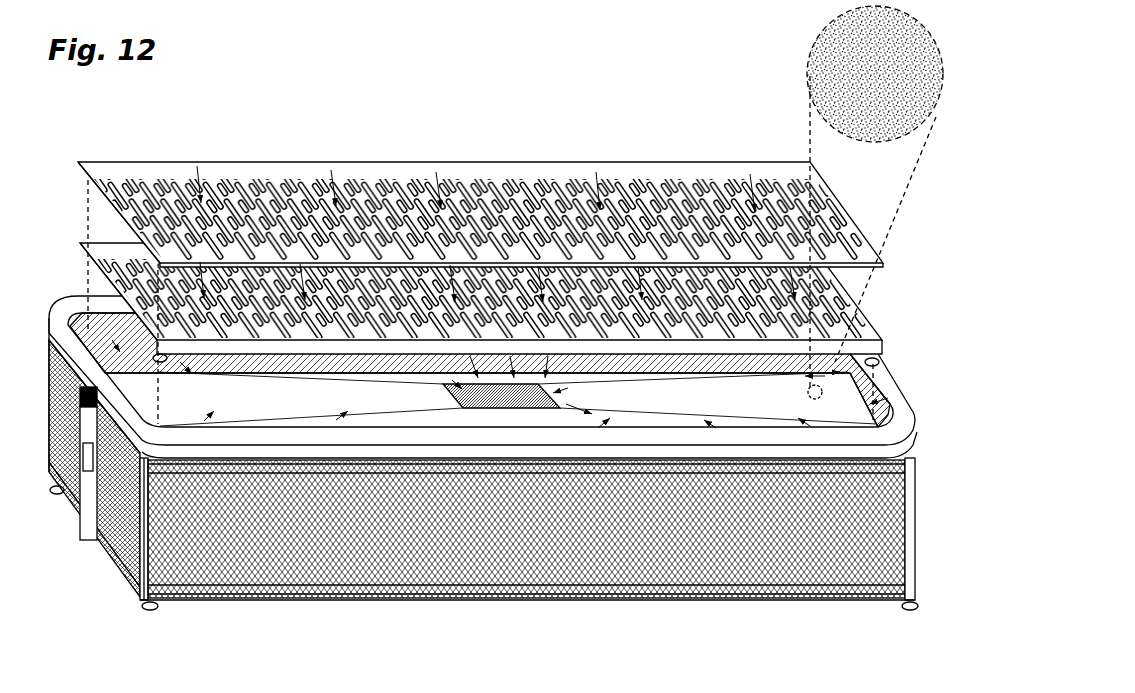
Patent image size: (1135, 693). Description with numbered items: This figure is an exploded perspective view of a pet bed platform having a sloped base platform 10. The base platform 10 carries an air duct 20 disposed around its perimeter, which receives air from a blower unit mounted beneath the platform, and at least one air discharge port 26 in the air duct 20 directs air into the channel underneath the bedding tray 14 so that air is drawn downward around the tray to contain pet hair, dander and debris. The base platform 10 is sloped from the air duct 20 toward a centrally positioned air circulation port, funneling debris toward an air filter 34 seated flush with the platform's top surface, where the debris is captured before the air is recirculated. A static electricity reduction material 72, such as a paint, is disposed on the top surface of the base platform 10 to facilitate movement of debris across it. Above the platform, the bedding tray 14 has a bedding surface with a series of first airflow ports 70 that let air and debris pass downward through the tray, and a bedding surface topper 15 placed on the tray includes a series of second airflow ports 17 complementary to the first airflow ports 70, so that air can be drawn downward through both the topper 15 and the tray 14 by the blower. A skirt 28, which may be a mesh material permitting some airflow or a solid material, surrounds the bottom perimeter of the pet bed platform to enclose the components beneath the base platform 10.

The base platform 10 is at (272, 406).
The bedding tray 14 is at (84, 257).
The bedding surface topper 15 is at (555, 161).
The second airflow ports 17 is at (693, 170).
The air duct 20 is at (888, 402).
The air discharge port 26 is at (840, 374).
The skirt 28 is at (303, 572).
The air filter 34 is at (470, 403).
The first airflow ports 70 is at (161, 267).
The static electricity reduction material 72 is at (835, 68).